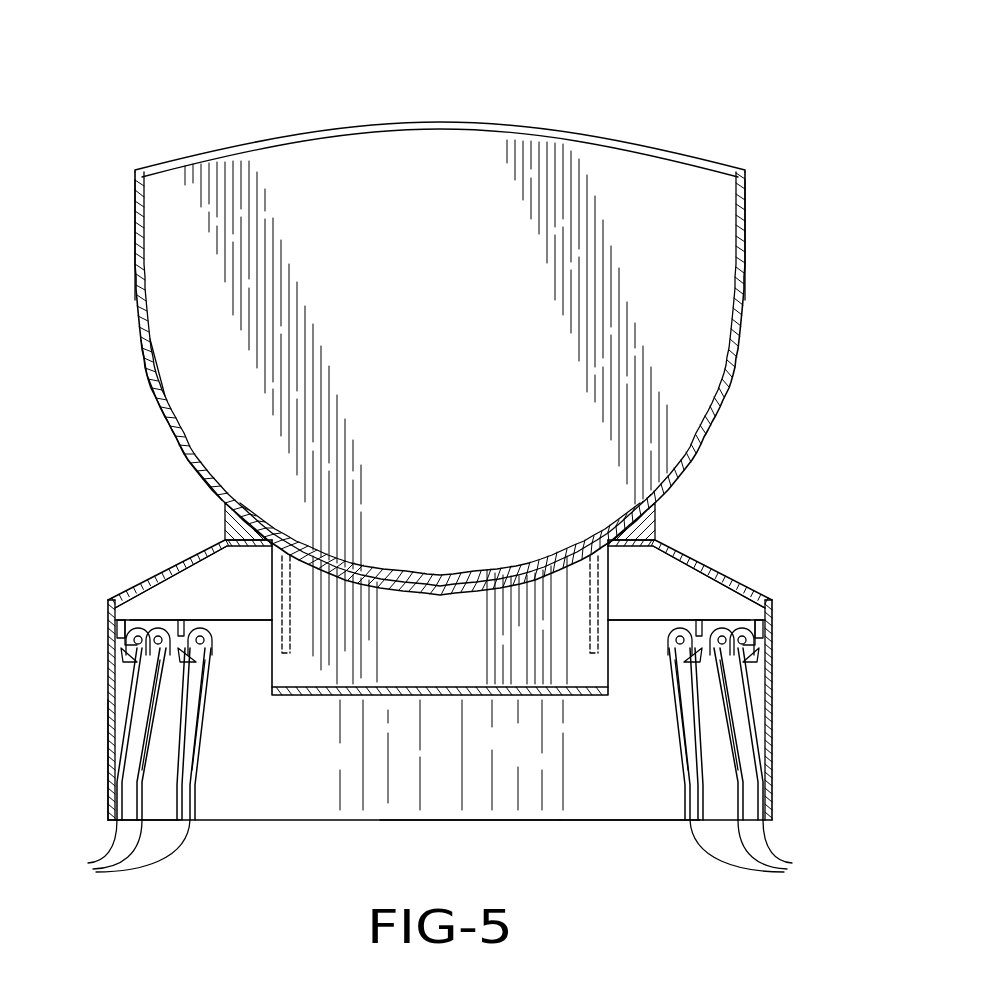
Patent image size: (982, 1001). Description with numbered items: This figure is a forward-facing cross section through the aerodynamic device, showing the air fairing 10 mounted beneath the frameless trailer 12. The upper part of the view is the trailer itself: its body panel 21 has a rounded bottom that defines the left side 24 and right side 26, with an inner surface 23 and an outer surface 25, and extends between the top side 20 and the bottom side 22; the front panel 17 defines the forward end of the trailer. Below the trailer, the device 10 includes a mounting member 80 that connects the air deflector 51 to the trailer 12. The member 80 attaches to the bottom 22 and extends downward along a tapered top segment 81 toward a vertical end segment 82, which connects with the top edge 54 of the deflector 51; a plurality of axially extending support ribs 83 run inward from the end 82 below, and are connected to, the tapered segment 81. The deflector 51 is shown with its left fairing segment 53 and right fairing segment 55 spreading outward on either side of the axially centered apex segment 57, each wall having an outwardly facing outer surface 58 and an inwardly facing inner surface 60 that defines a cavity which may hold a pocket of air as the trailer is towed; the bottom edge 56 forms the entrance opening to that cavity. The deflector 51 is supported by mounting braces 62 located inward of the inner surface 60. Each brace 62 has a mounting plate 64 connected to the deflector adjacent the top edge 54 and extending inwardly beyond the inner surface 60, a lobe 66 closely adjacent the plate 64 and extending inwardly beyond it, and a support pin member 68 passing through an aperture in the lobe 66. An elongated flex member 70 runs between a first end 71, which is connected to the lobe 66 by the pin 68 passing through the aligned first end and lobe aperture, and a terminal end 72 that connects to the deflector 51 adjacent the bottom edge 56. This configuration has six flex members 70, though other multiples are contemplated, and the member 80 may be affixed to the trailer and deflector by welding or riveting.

The air fairing 10 is at (594, 833).
The frameless trailer 12 is at (237, 110).
The front panel 17 is at (456, 371).
The top side 20 is at (435, 101).
The body panel 21 is at (140, 366).
The bottom side 22 is at (330, 845).
The inner surface 23 is at (165, 388).
The left side 24 is at (754, 263).
The outer surface 25 is at (166, 420).
The right side 26 is at (126, 263).
The air deflector 51 is at (102, 752).
The first fairing segment 53 is at (783, 750).
The top edge 54 is at (117, 630).
The second fairing segment 55 is at (72, 768).
The bottom edge 56 is at (508, 822).
The apex segment 57 is at (440, 789).
The outer surface 58 is at (108, 728).
The inner surface 60 is at (276, 794).
The mounting brace 62 is at (205, 770).
The mounting plate 64 is at (122, 647).
The lobe 66 is at (128, 662).
The support pin member 68 is at (150, 623).
The flex member 70 is at (152, 688).
The first end 71 is at (208, 630).
The terminal end 72 is at (112, 856).
The mounting member 80 is at (196, 540).
The tapered top segment 81 is at (174, 562).
The vertical end segment 82 is at (108, 604).
The support ribs 83 is at (157, 593).